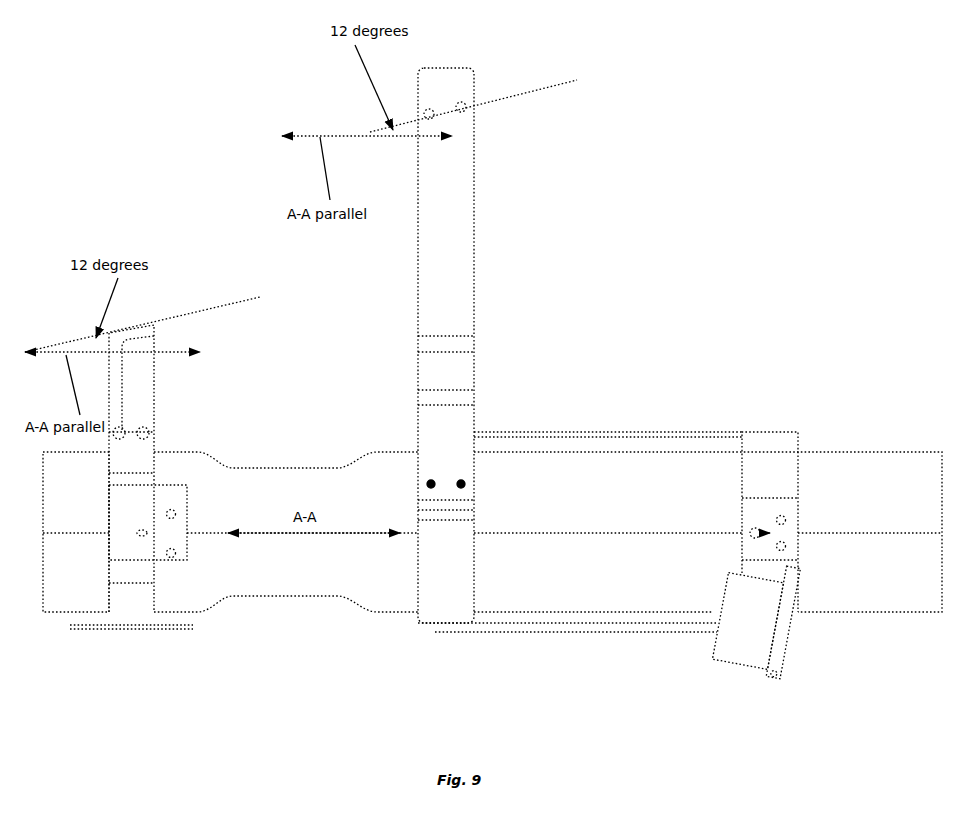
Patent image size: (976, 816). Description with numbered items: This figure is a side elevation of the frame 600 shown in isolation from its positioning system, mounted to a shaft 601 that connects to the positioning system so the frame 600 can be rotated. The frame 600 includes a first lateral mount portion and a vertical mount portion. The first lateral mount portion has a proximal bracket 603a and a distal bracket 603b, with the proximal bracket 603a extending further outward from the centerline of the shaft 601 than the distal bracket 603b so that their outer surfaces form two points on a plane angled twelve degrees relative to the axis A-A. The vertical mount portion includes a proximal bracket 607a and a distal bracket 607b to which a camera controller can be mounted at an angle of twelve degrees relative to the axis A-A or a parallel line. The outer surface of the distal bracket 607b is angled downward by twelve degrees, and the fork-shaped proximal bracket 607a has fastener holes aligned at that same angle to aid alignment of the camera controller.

The frame 600 is at (190, 134).
The shaft 601 is at (845, 460).
The proximal bracket of the vertical mount portion 607a is at (465, 72).
The distal bracket of the vertical mount portion 607b is at (143, 325).
The proximal bracket of the first lateral mount portion 603a is at (766, 548).
The distal bracket of the first lateral mount portion 603b is at (157, 550).